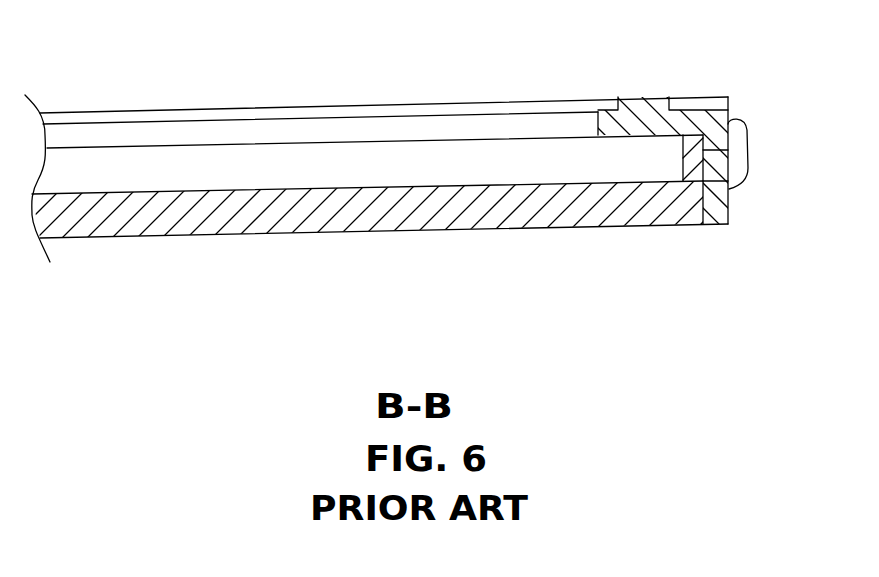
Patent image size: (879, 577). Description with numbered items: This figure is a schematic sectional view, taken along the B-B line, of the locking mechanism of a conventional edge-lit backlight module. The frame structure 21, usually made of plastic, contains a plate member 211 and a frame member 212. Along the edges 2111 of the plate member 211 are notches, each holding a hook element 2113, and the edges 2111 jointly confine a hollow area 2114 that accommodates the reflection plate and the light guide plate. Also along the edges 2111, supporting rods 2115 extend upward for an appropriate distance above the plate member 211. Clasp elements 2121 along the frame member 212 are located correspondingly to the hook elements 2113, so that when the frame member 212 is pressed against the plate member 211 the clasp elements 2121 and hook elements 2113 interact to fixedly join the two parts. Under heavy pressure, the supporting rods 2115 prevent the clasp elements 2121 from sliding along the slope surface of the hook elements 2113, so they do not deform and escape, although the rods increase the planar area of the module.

The frame structure 21 is at (716, 55).
The plate member 211 is at (541, 210).
The edges 2111 is at (712, 213).
The hook element 2113 is at (708, 172).
The hollow area 2114 is at (218, 191).
The supporting rods 2115 is at (742, 146).
The frame member 212 is at (642, 100).
The clasp elements 2121 is at (724, 197).